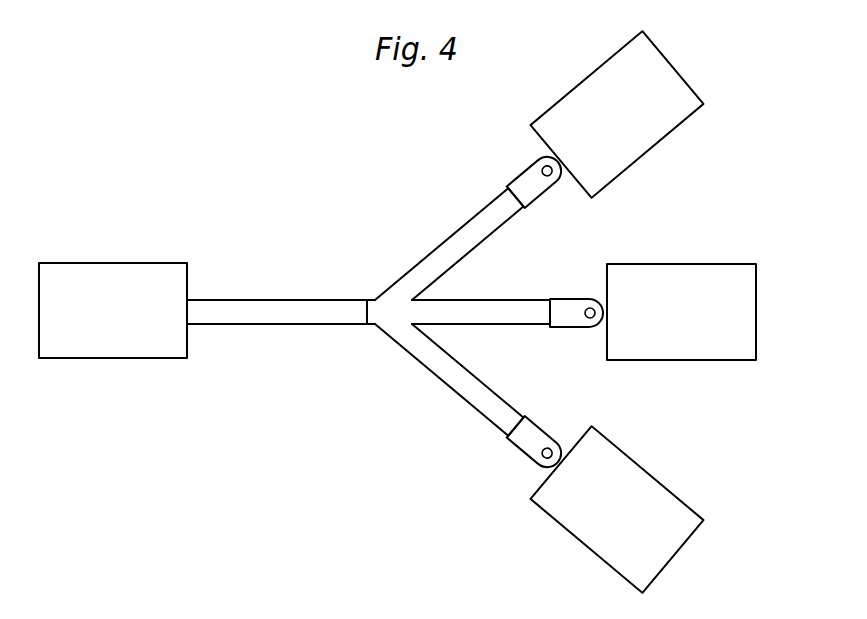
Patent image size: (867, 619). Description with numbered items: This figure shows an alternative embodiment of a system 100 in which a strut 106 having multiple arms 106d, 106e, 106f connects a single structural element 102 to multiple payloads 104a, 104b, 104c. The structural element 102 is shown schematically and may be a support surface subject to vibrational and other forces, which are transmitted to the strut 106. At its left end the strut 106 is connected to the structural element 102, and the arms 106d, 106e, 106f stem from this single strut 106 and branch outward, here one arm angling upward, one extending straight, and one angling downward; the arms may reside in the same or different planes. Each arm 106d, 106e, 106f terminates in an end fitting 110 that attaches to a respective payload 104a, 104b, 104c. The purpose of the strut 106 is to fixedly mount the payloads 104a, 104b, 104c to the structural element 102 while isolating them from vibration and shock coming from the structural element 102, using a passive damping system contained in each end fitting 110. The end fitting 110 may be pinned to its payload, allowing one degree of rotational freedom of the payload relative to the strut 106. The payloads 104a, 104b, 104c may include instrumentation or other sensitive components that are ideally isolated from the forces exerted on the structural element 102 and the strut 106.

The system 100 is at (198, 195).
The structural element 102 is at (129, 320).
The payload 104a is at (642, 124).
The payload 104b is at (712, 324).
The payload 104c is at (637, 518).
The strut 106 is at (282, 299).
The arm 106d is at (468, 222).
The arm 106e is at (502, 299).
The arm 106f is at (450, 387).
The end fitting 110 is at (522, 451).